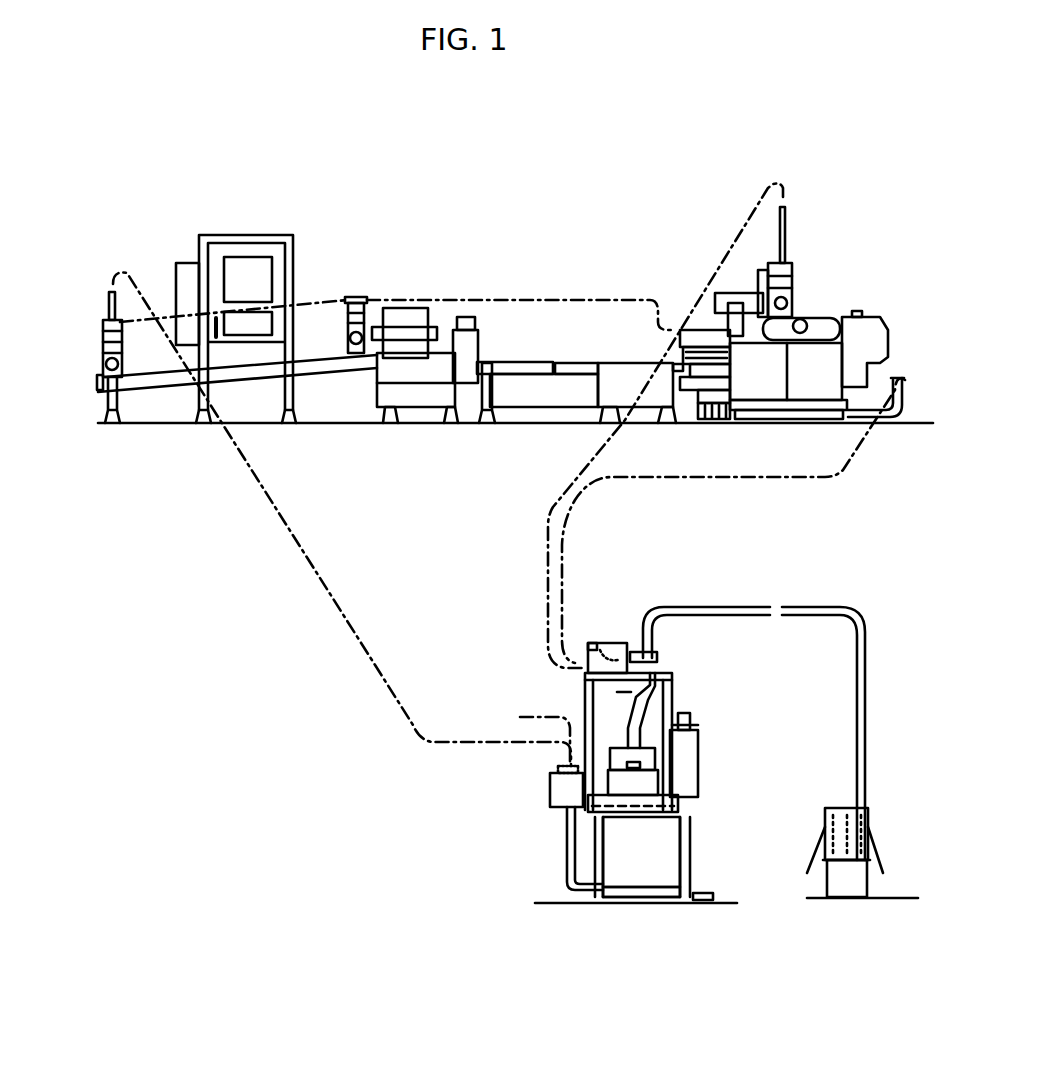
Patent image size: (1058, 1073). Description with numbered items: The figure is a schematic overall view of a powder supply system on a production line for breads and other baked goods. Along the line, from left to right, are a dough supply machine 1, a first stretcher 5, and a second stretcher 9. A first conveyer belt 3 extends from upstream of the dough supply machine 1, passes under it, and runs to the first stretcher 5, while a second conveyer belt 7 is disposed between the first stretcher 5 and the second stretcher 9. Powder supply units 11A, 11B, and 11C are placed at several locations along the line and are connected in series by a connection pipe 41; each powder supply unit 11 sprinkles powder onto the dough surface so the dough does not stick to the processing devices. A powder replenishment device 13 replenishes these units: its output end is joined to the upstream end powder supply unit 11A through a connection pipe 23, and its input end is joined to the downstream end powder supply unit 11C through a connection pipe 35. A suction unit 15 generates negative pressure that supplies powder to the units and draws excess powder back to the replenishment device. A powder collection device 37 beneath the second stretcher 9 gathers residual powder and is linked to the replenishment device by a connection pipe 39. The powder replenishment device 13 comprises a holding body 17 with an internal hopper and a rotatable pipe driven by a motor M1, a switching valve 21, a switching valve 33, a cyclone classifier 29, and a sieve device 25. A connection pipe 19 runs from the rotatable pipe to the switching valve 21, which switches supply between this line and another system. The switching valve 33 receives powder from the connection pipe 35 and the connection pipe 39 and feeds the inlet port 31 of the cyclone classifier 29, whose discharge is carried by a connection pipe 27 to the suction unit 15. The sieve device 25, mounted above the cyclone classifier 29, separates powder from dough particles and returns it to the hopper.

The dough supply machine 1 is at (242, 229).
The first conveyer belt 3 is at (333, 369).
The first stretcher 5 is at (443, 316).
The second conveyer belt 7 is at (533, 364).
The second stretcher 9 is at (877, 309).
The powder supply unit 11 is at (706, 326).
The upstream end powder supply unit 11A is at (101, 331).
The powder supply unit 11B is at (359, 283).
The downstream end powder supply unit 11C is at (799, 254).
The powder replenishment device 13 is at (648, 906).
The suction unit 15 is at (862, 887).
The holding body 17 is at (667, 853).
The connection pipe 19 is at (560, 860).
The switching valve 21 is at (550, 793).
The connection pipe 23 is at (337, 600).
The sieve device 25 is at (649, 785).
The connection pipe 27 is at (813, 613).
The cyclone classifier 29 is at (648, 698).
The inlet port 31 is at (635, 650).
The switching valve 33 is at (610, 642).
The connection pipe 35 is at (553, 512).
The powder collection device 37 is at (821, 419).
The connection pipe 39 is at (667, 478).
The connection pipe 41 is at (308, 300).
The motor M1 is at (713, 891).